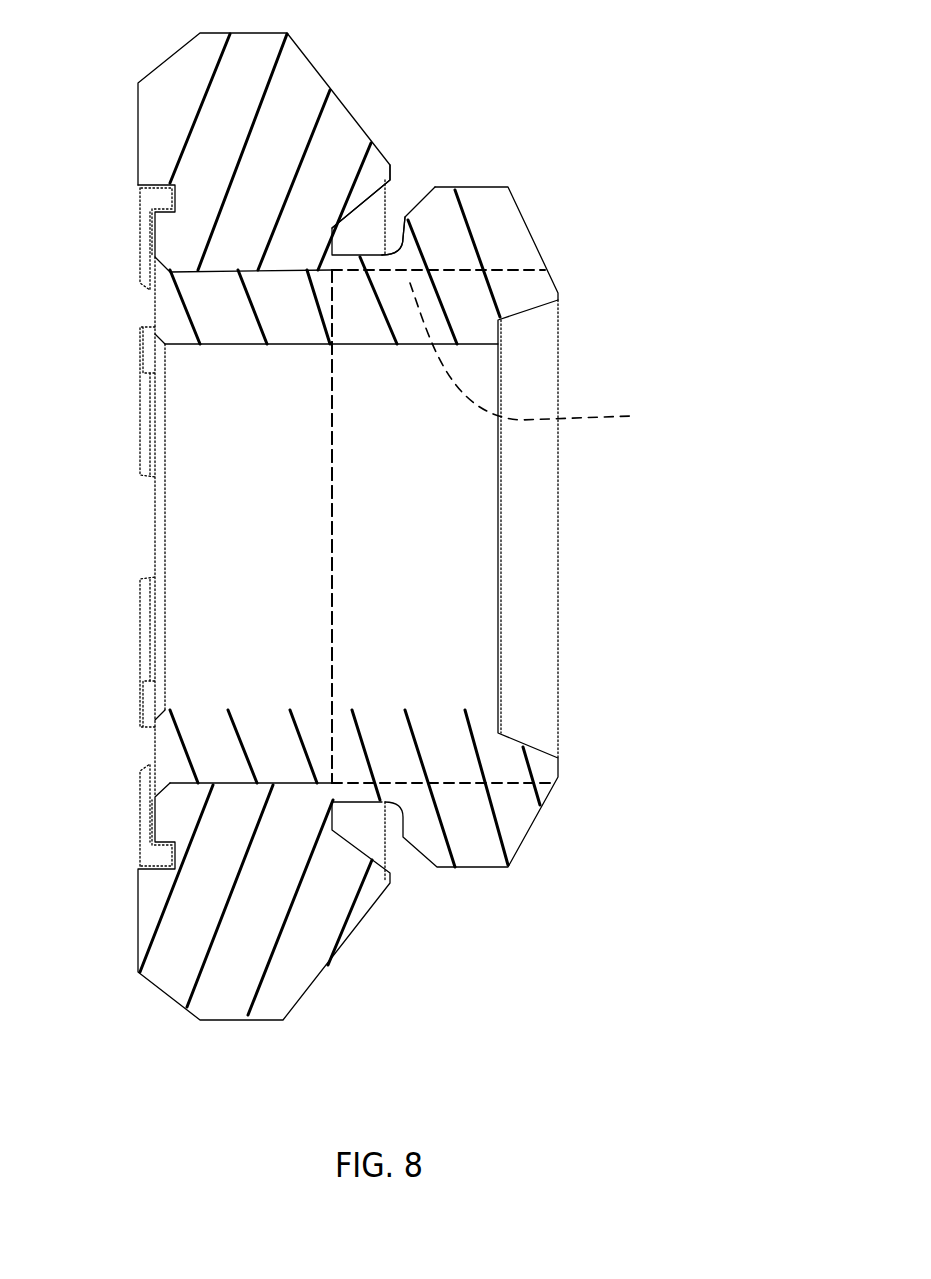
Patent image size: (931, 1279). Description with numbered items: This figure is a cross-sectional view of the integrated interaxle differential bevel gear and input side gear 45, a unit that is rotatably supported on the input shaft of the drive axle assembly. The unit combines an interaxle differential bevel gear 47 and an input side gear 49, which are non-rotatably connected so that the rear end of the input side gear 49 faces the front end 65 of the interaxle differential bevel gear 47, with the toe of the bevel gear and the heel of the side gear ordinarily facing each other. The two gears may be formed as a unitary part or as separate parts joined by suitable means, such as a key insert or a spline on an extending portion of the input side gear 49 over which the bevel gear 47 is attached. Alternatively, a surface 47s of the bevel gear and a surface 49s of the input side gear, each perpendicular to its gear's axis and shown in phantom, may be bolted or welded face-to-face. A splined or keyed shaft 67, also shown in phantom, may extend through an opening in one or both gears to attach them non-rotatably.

The integrated interaxle differential bevel gear and input side gear 45 is at (410, 515).
The interaxle differential bevel gear 47 is at (345, 104).
The input side gear 49 is at (536, 224).
The front end of the interaxle differential bevel gear 65 is at (392, 171).
The splined or keyed shaft 67 is at (402, 208).
The surface of the input side gear 49s is at (330, 532).
The surface of the interaxle differential bevel gear 47s is at (332, 572).